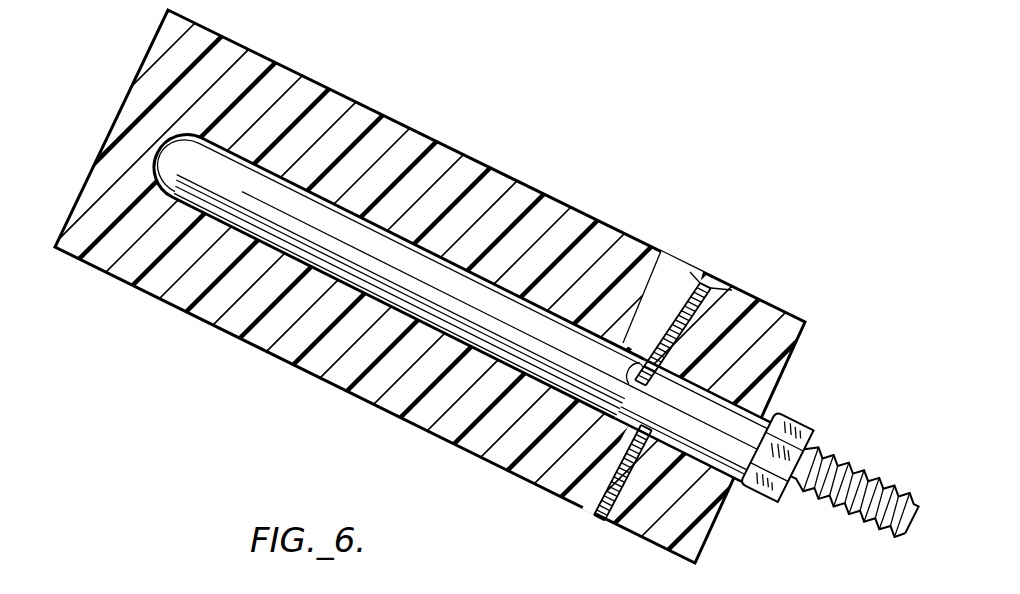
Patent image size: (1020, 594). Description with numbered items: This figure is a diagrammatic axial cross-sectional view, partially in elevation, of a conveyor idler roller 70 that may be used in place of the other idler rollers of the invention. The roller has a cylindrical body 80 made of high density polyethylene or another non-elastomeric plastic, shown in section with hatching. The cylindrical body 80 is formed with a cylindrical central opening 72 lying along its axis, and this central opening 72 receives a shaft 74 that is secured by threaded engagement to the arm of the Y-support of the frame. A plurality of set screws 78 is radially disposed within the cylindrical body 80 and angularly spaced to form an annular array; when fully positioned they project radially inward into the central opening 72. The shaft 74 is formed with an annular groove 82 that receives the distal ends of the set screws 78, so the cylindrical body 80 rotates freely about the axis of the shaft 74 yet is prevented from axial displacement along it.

The conveyor idler roller 70 is at (685, 130).
The cylindrical central opening 72 is at (503, 296).
The shaft 74 is at (464, 312).
The set screws 78 is at (702, 282).
The cylindrical body 80 is at (341, 96).
The annular groove 82 is at (661, 252).